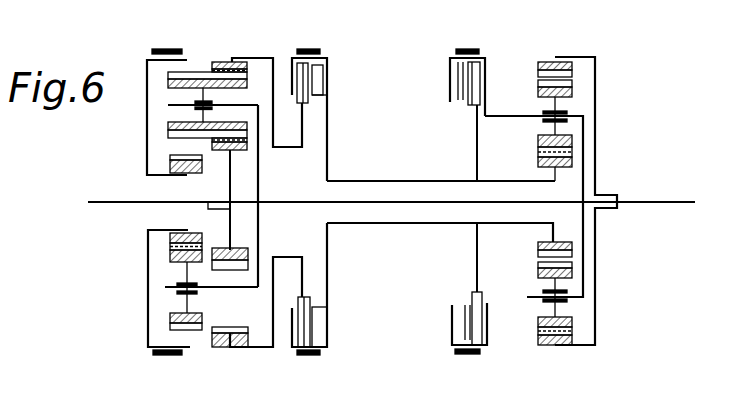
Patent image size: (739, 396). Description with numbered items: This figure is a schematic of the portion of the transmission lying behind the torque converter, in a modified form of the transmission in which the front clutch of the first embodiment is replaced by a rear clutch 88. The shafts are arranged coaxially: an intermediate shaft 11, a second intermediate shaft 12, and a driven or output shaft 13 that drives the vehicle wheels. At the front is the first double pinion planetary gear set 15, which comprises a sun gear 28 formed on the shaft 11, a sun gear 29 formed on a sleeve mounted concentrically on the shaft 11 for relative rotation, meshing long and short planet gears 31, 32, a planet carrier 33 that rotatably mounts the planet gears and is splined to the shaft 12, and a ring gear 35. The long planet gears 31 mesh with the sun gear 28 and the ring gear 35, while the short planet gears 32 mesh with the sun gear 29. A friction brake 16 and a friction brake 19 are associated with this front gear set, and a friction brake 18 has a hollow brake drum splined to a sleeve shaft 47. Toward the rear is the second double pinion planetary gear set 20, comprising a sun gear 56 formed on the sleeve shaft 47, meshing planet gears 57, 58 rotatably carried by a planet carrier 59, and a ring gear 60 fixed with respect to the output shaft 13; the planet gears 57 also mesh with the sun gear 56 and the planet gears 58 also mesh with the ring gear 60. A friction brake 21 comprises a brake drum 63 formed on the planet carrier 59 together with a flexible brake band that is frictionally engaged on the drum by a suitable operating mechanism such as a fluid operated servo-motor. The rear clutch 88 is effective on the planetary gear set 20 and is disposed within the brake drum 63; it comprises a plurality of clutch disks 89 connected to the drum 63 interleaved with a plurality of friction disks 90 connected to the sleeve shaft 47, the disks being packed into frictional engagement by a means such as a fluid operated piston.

The intermediate shaft 11 is at (98, 205).
The second intermediate shaft 12 is at (383, 203).
The output shaft 13 is at (678, 200).
The first double pinion planetary gear set 15 is at (200, 70).
The friction brake 16 is at (169, 48).
The friction brake 18 is at (321, 48).
The friction brake 19 is at (291, 68).
The second double pinion planetary gear set 20 is at (579, 80).
The friction brake 21 is at (471, 47).
The sun gear 28 is at (240, 150).
The sun gear 29 is at (170, 158).
The long planet gears 31 is at (170, 135).
The short planet gears 32 is at (170, 325).
The planet carrier 33 is at (260, 232).
The ring gear 35 is at (226, 327).
The sleeve shaft 47 is at (497, 180).
The sun gear 56 is at (572, 254).
The planet gears 57 is at (543, 85).
The planet gears 58 is at (572, 265).
The planet carrier 59 is at (586, 170).
The ring gear 60 is at (560, 60).
The brake drum 63 is at (458, 62).
The rear clutch 88 is at (489, 70).
The clutch disks 89 is at (458, 78).
The friction disks 90 is at (481, 320).